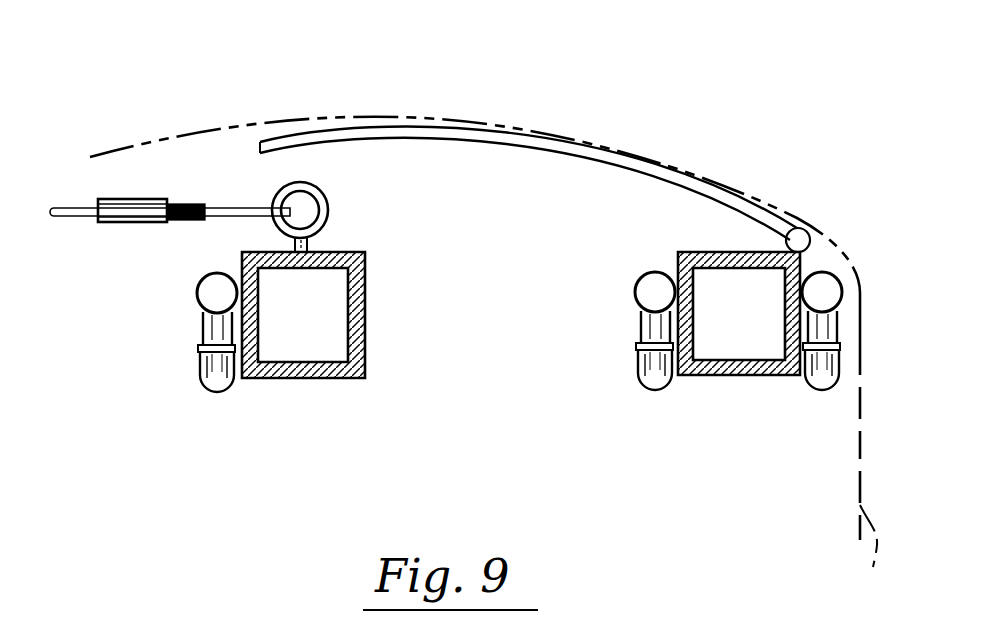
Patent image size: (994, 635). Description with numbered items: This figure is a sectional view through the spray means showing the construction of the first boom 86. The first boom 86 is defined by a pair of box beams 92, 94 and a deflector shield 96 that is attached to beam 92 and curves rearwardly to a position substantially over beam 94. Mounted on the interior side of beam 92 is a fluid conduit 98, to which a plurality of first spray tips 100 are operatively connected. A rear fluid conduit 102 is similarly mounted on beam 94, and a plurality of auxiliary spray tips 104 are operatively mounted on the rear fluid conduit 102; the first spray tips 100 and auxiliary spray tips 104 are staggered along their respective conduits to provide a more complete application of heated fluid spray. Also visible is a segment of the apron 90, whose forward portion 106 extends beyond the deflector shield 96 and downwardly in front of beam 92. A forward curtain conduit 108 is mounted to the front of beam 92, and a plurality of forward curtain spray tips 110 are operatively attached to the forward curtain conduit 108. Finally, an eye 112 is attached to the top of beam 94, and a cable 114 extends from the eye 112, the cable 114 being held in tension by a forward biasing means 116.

The first boom 86 is at (518, 431).
The apron 90 is at (373, 118).
The box beam 92 is at (762, 377).
The box beam 94 is at (367, 322).
The deflector shield 96 is at (497, 148).
The fluid conduit 98 is at (653, 272).
The first spray tips 100 is at (648, 388).
The rear fluid conduit 102 is at (197, 298).
The auxiliary spray tips 104 is at (210, 384).
The forward portion of apron 106 is at (873, 567).
The forward curtain conduit 108 is at (827, 270).
The forward curtain spray tips 110 is at (822, 392).
The eye 112 is at (330, 210).
The cable 114 is at (75, 208).
The forward biasing means 116 is at (112, 224).